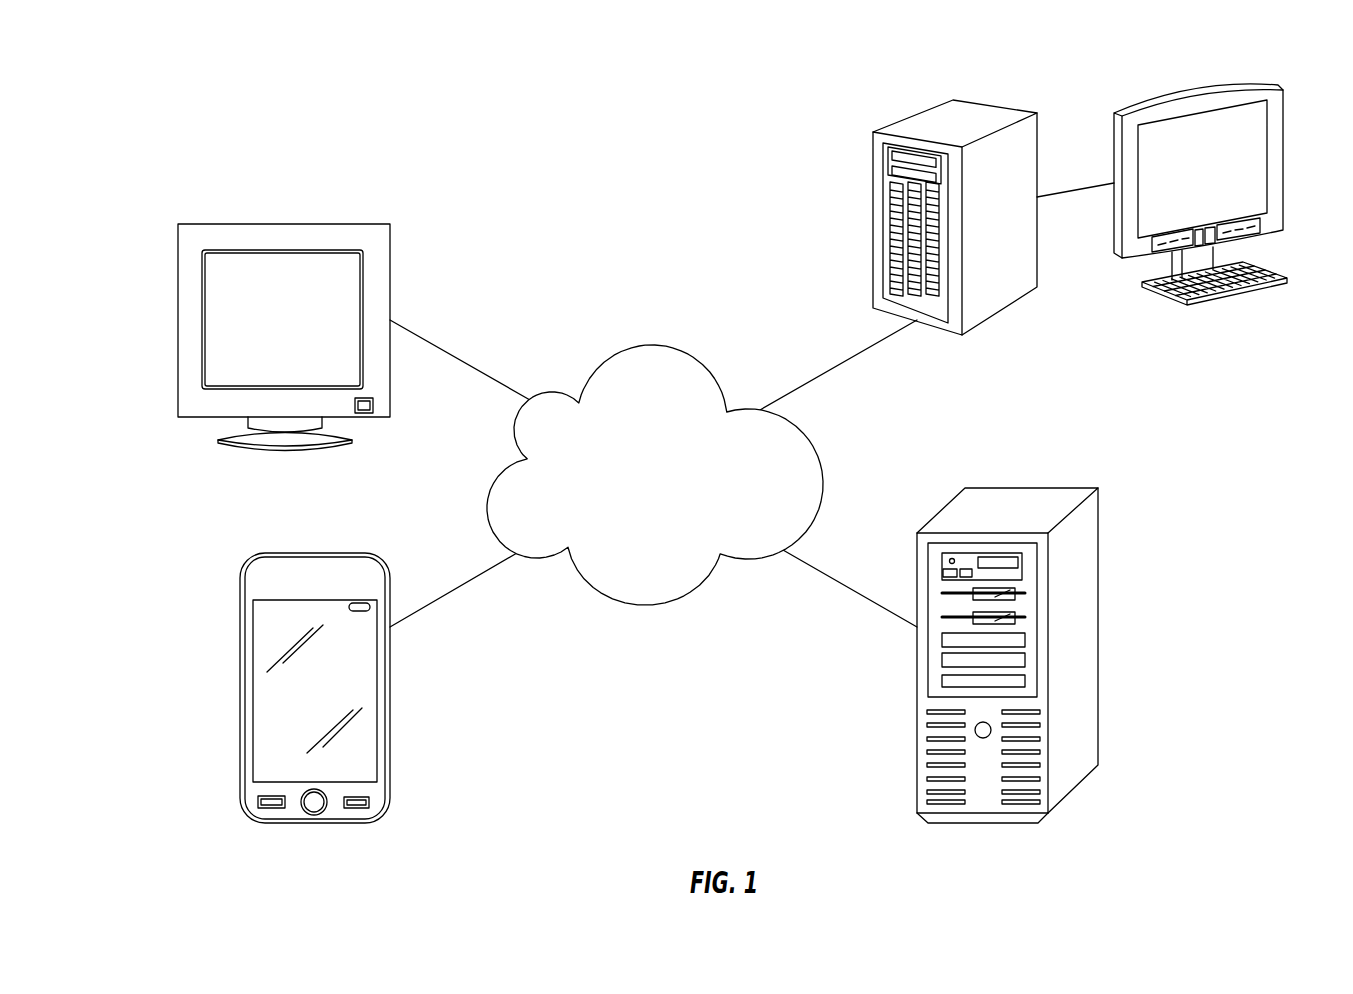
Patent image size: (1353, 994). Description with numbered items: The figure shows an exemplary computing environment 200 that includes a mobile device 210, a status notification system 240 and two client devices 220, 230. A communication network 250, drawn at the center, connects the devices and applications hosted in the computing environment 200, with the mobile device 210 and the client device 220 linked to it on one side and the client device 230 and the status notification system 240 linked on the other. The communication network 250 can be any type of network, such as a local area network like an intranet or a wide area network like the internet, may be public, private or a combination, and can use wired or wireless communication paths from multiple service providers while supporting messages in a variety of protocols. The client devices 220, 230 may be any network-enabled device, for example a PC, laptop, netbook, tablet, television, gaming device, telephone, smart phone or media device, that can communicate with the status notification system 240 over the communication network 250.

The computing environment 200 is at (571, 71).
The mobile device 210 is at (238, 688).
The client device 220 is at (178, 322).
The client device 230 is at (873, 220).
The status notification system 240 is at (1100, 630).
The communication network 250 is at (603, 358).